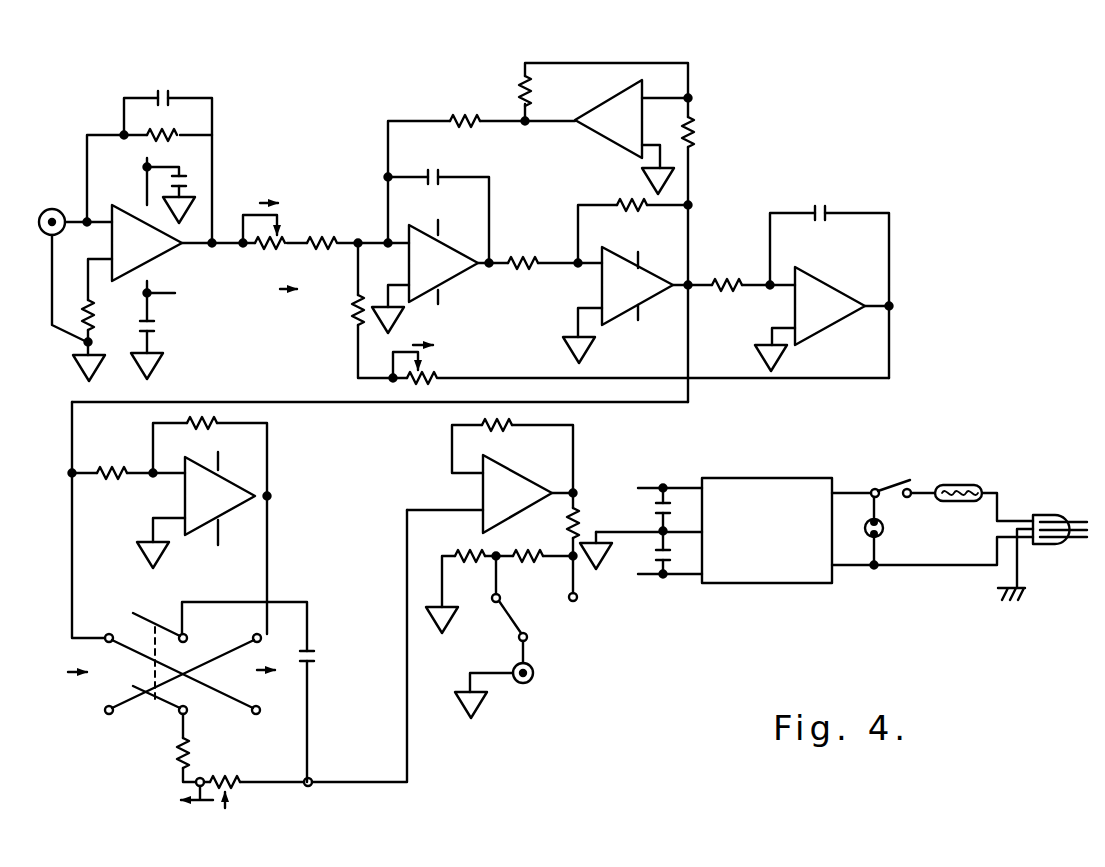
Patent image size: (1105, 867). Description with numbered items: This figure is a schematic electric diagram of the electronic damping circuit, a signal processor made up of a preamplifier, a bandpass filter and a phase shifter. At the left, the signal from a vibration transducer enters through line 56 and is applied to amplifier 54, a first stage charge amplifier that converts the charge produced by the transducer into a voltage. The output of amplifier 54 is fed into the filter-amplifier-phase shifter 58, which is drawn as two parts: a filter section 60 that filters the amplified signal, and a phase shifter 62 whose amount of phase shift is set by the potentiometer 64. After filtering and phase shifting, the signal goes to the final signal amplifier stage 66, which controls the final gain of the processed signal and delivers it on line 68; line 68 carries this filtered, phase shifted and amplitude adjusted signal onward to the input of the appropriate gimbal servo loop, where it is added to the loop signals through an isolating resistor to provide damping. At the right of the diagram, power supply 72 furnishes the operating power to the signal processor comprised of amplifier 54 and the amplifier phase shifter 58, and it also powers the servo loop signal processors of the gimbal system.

The amplifier 54 is at (232, 123).
The line 56 is at (72, 216).
The filter-amplifier-phase shifter 58 is at (839, 191).
The filter section 60 is at (712, 95).
The phase shifter 62 is at (288, 480).
The potentiometer 64 is at (205, 808).
The final signal amplifier stage 66 is at (591, 480).
The line 68 is at (523, 660).
The power supply 72 is at (802, 600).